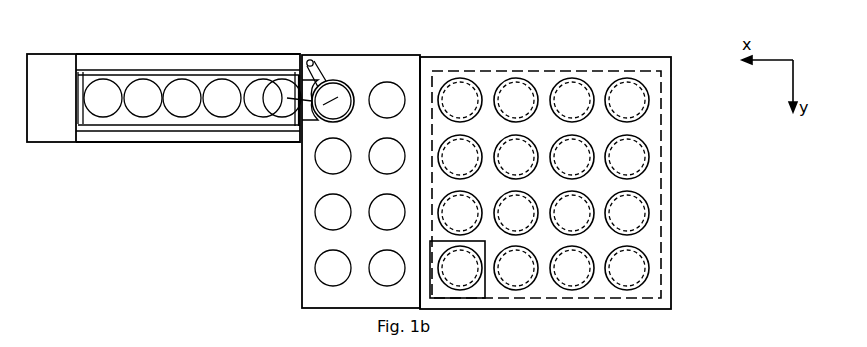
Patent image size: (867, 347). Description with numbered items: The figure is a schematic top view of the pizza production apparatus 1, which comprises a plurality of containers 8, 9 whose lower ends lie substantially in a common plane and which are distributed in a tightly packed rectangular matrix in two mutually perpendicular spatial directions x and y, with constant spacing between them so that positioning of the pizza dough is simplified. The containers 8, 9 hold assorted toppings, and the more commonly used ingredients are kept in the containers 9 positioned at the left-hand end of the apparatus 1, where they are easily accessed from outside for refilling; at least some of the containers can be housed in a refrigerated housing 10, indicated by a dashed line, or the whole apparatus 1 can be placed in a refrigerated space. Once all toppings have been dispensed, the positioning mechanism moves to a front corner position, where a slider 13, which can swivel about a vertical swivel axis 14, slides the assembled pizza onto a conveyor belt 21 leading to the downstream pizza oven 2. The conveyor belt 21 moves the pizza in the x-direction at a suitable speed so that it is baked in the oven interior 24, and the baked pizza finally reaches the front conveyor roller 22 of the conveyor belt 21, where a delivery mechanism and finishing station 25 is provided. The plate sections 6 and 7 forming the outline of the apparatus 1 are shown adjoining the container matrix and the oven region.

The production apparatus 1 is at (465, 42).
The pizza oven 2 is at (127, 44).
The sample carrier plate 6 is at (521, 62).
The transfer plate 7 is at (394, 62).
The container 8 is at (628, 92).
The container 9 is at (315, 213).
The refrigerated housing 10 is at (572, 72).
The slider 13 is at (321, 73).
The vertical swivel axis 14 is at (311, 59).
The conveyor belt 21 is at (212, 72).
The front conveyor roller 22 is at (78, 116).
The oven interior 24 is at (102, 58).
The delivery mechanism and finishing station 25 is at (57, 70).